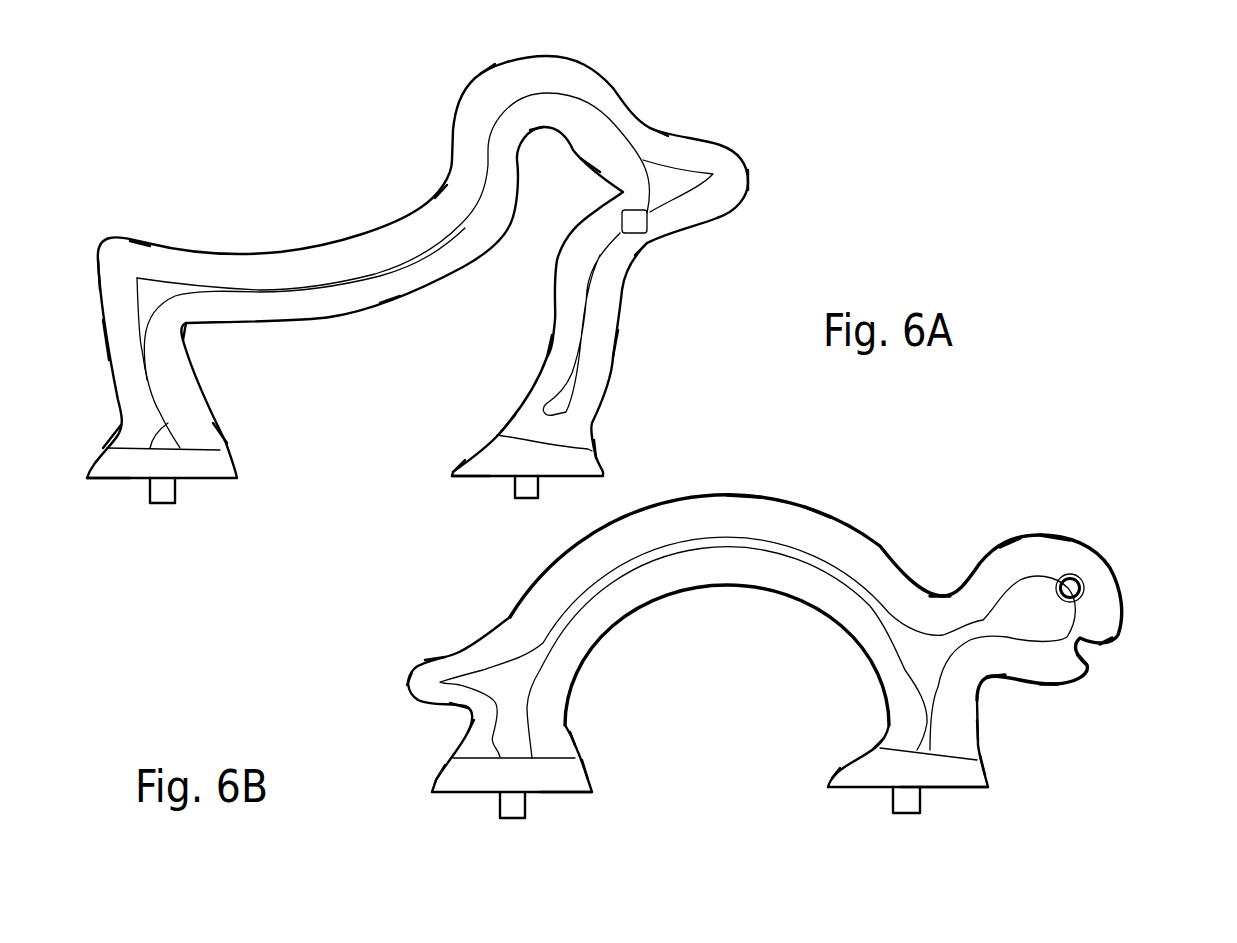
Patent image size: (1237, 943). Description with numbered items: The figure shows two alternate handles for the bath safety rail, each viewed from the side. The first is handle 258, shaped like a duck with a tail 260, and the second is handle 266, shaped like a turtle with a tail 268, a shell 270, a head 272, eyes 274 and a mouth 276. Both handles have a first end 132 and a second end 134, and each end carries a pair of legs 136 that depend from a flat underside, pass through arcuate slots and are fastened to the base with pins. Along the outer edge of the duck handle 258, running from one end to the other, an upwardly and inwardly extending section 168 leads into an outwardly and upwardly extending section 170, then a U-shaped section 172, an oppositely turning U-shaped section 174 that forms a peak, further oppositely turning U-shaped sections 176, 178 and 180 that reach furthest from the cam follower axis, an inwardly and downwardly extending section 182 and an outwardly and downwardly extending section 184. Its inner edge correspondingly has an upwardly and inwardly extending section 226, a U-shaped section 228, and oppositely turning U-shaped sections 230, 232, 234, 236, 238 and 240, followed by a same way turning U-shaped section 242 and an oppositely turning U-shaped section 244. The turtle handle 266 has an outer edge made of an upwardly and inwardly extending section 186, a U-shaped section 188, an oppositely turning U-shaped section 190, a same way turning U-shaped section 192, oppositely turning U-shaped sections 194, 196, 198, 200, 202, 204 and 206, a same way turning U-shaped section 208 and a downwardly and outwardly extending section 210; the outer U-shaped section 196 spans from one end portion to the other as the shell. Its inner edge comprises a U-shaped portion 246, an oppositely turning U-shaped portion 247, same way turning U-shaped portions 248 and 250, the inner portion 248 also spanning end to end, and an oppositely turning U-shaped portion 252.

In FIG. 6A, the first end 132 is at (107, 480).
In FIG. 6B, the first end 132 is at (562, 795).
In FIG. 6A, the second end 134 is at (468, 478).
In FIG. 6B, the second end 134 is at (947, 790).
In FIG. 6A, the leg 136 is at (177, 488).
In FIG. 6B, the leg 136 is at (498, 800).
In FIG. 6A, the upwardly and inwardly extending section 168 is at (110, 435).
In FIG. 6A, the outwardly and upwardly extending section 170 is at (103, 340).
In FIG. 6A, the U-shaped section 172 is at (140, 240).
In FIG. 6A, the oppositely turning U-shaped section 174 is at (503, 65).
In FIG. 6A, the oppositely turning U-shaped section 176 is at (657, 125).
In FIG. 6A, the oppositely turning U-shaped section 178 is at (748, 170).
In FIG. 6A, the oppositely turning U-shaped section 180 is at (647, 250).
In FIG. 6A, the inwardly and downwardly extending section 182 is at (613, 357).
In FIG. 6A, the outwardly and downwardly extending section 184 is at (593, 453).
In FIG. 6B, the upwardly and inwardly extending section 186 is at (460, 748).
In FIG. 6B, the U-shaped section 188 is at (467, 717).
In FIG. 6B, the oppositely turning U-shaped section 190 is at (467, 708).
In FIG. 6B, the same way turning U-shaped section 192 is at (408, 678).
In FIG. 6B, the oppositely turning U-shaped section 194 is at (488, 633).
In FIG. 6B, the oppositely turning U-shaped section 196 is at (733, 496).
In FIG. 6B, the oppositely turning U-shaped section 198 is at (947, 580).
In FIG. 6B, the oppositely turning U-shaped section 200 is at (1063, 538).
In FIG. 6B, the oppositely turning U-shaped section 202 is at (1090, 655).
In FIG. 6B, the oppositely turning U-shaped section 204 is at (1063, 685).
In FIG. 6B, the oppositely turning U-shaped section 206 is at (990, 682).
In FIG. 6B, the same way turning U-shaped section 208 is at (980, 737).
In FIG. 6B, the downwardly and outwardly extending section 210 is at (983, 767).
In FIG. 6A, the upwardly and inwardly extending section 226 is at (218, 427).
In FIG. 6A, the U-shaped section 228 is at (185, 330).
In FIG. 6A, the oppositely turning U-shaped section 230 is at (392, 305).
In FIG. 6A, the oppositely turning U-shaped section 232 is at (537, 133).
In FIG. 6A, the oppositely turning U-shaped section 234 is at (587, 163).
In FIG. 6A, the oppositely turning U-shaped section 236 is at (613, 197).
In FIG. 6A, the oppositely turning U-shaped section 238 is at (557, 250).
In FIG. 6A, the oppositely turning U-shaped section 240 is at (547, 352).
In FIG. 6A, the same way turning U-shaped section 242 is at (500, 425).
In FIG. 6A, the oppositely turning U-shaped section 244 is at (457, 465).
In FIG. 6B, the U-shaped portion 246 is at (593, 777).
In FIG. 6B, the oppositely turning U-shaped portion 247 is at (573, 743).
In FIG. 6B, the same way turning U-shaped portion 248 is at (717, 587).
In FIG. 6B, the same way turning U-shaped portion 250 is at (878, 738).
In FIG. 6B, the oppositely turning U-shaped portion 252 is at (837, 770).
In FIG. 6A, the handle 258 is at (308, 226).
In FIG. 6A, the tail 260 is at (100, 233).
In FIG. 6B, the handle 266 is at (925, 460).
In FIG. 6B, the tail 268 is at (427, 660).
In FIG. 6B, the shell 270 is at (820, 513).
In FIG. 6B, the head 272 is at (1013, 537).
In FIG. 6B, the eyes 274 is at (1083, 583).
In FIG. 6B, the mouth 276 is at (1103, 648).